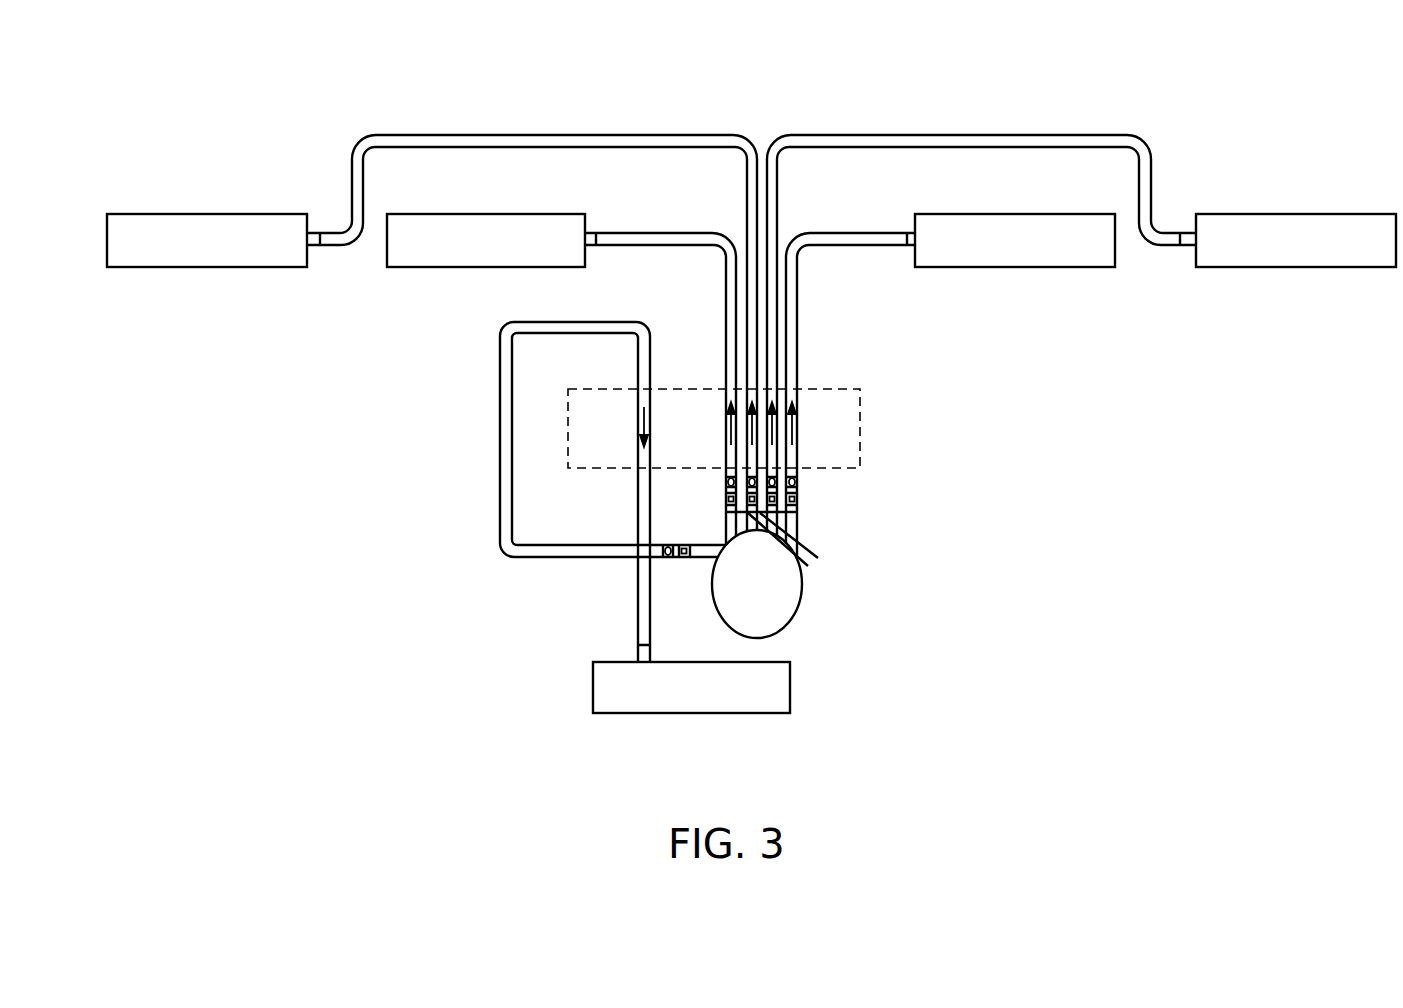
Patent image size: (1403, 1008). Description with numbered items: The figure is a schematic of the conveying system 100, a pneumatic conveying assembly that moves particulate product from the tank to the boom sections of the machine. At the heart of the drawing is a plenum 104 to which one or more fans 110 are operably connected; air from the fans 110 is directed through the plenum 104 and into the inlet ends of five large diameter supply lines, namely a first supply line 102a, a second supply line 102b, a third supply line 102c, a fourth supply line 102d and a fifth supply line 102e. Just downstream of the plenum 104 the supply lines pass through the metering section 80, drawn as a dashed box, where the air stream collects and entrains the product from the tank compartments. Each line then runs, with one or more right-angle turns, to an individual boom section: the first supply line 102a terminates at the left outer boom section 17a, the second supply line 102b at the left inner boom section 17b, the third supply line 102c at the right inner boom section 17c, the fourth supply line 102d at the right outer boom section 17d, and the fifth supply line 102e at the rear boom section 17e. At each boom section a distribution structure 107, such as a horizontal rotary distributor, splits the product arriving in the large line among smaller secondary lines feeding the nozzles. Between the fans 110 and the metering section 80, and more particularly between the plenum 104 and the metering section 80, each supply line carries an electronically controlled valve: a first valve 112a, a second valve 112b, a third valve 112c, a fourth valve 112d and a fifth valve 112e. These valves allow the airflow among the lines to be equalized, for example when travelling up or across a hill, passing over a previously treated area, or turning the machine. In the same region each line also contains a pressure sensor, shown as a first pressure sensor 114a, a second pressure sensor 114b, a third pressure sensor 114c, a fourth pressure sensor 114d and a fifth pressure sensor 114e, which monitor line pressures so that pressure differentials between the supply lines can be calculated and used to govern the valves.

The conveying system 100 is at (294, 103).
The left outer boom section 17a is at (230, 222).
The left inner boom section 17b is at (515, 222).
The right inner boom section 17c is at (980, 222).
The right outer boom section 17d is at (1265, 222).
The rear boom section 17e is at (718, 700).
The first supply line 102a is at (555, 133).
The second supply line 102b is at (665, 247).
The third supply line 102c is at (830, 247).
The fourth supply line 102d is at (958, 133).
The fifth supply line 102e is at (505, 395).
The plenum 104 is at (800, 545).
The distribution structure 107 is at (640, 657).
The fan 110 is at (788, 622).
The first valve 112a is at (748, 495).
The second valve 112b is at (726, 478).
The third valve 112c is at (797, 483).
The fourth valve 112d is at (777, 486).
The fifth valve 112e is at (668, 555).
The first pressure sensor 114a is at (746, 487).
The second pressure sensor 114b is at (726, 495).
The third pressure sensor 114c is at (797, 498).
The fourth pressure sensor 114d is at (795, 537).
The fifth pressure sensor 114e is at (684, 555).
The metering section 80 is at (860, 430).